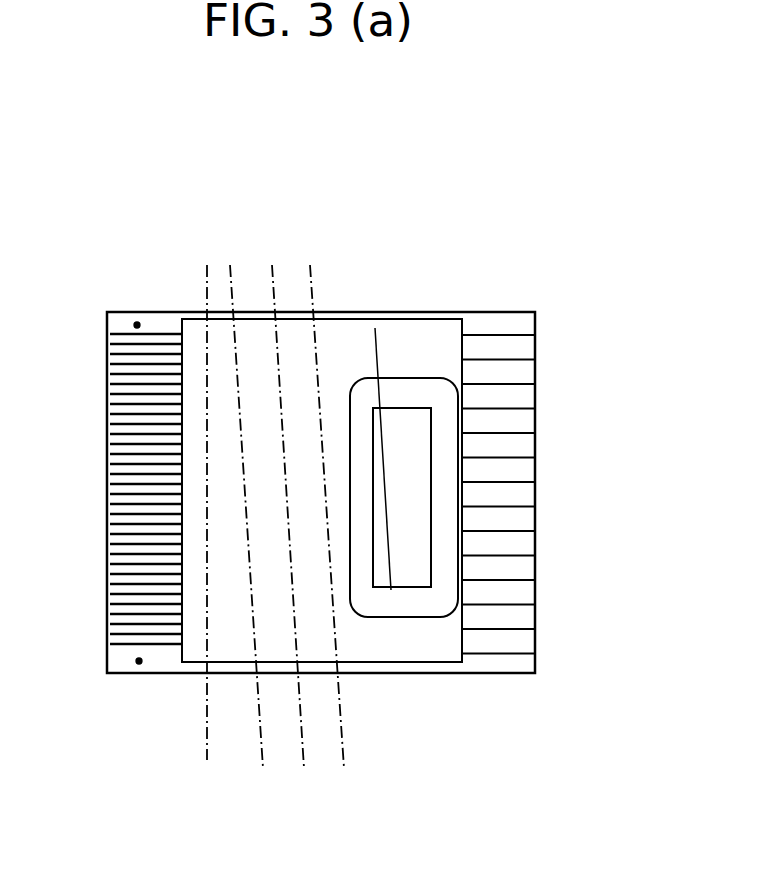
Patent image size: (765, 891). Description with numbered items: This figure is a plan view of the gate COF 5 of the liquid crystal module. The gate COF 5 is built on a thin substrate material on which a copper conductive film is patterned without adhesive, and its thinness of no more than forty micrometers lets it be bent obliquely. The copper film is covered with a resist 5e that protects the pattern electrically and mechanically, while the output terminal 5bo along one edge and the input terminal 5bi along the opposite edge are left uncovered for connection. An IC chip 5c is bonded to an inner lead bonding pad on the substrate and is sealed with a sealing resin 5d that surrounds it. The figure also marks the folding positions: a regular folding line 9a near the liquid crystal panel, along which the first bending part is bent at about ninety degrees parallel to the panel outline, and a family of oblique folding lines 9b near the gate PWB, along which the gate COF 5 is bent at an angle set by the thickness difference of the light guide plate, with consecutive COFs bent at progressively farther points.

The gate COF 5 is at (440, 210).
The output terminal 5bo is at (122, 487).
The input terminal 5bi is at (518, 320).
The IC chip 5c is at (420, 485).
The sealing resin 5d is at (437, 602).
The resist 5e is at (228, 650).
The regular folding line 9a is at (203, 280).
The oblique folding lines 9b is at (155, 186).